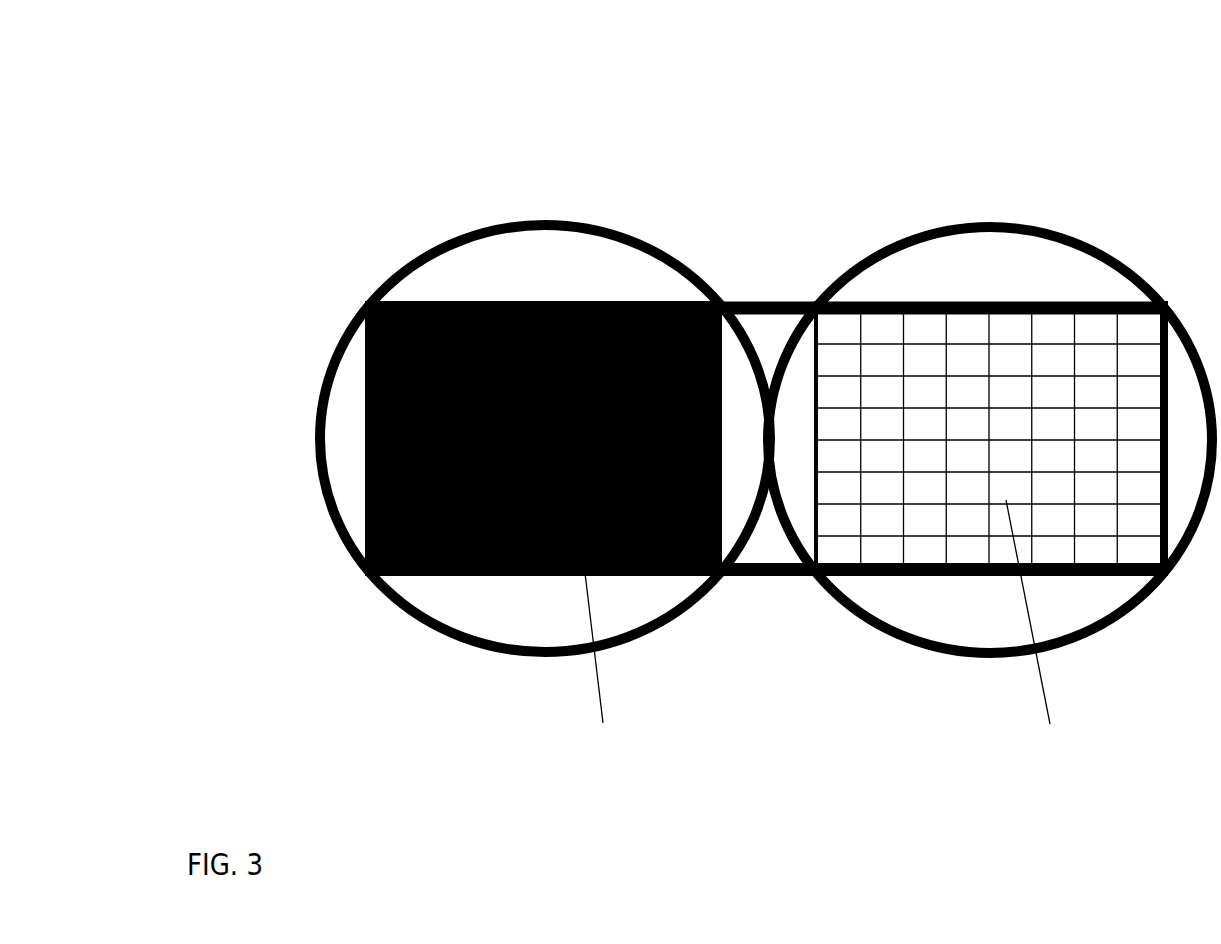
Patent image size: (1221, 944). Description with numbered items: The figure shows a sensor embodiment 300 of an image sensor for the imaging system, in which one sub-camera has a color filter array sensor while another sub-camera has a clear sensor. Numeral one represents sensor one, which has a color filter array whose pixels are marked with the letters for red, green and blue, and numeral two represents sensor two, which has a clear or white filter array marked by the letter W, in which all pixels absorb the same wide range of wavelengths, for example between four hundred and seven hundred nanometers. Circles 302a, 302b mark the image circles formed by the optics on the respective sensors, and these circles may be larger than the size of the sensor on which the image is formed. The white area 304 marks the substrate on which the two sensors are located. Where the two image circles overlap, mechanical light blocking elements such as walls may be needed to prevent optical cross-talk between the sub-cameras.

The sensor embodiment 300 is at (772, 51).
The image circle 302a is at (470, 225).
The image circle 302b is at (920, 227).
The substrate 304 is at (768, 327).